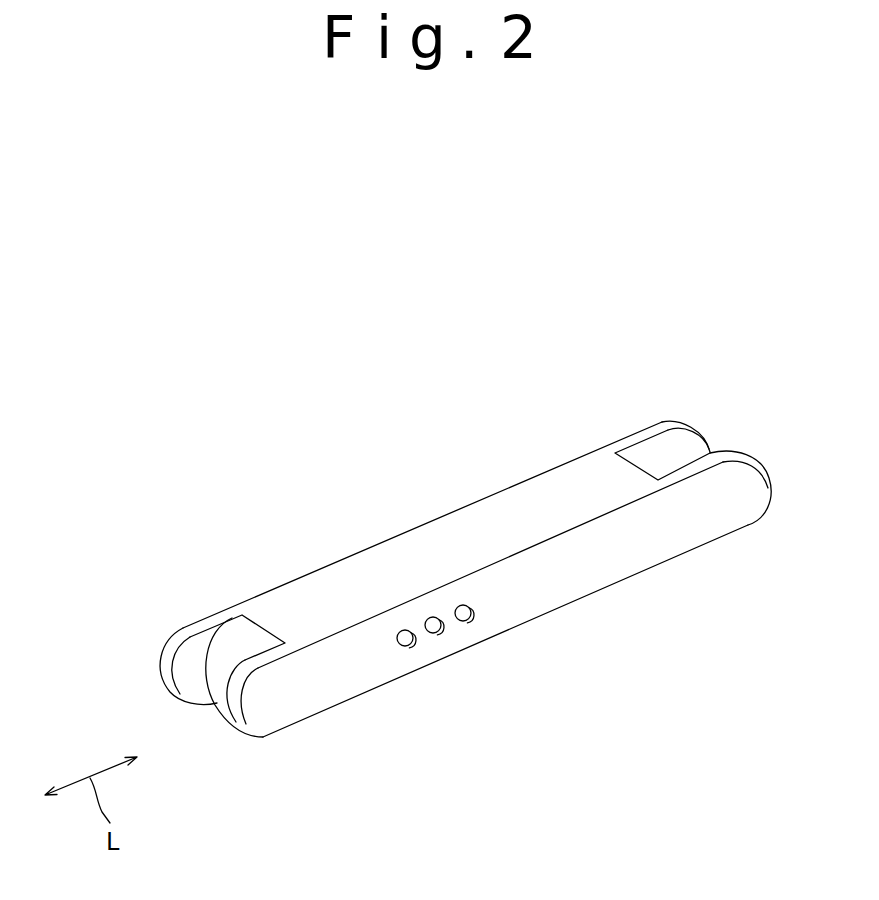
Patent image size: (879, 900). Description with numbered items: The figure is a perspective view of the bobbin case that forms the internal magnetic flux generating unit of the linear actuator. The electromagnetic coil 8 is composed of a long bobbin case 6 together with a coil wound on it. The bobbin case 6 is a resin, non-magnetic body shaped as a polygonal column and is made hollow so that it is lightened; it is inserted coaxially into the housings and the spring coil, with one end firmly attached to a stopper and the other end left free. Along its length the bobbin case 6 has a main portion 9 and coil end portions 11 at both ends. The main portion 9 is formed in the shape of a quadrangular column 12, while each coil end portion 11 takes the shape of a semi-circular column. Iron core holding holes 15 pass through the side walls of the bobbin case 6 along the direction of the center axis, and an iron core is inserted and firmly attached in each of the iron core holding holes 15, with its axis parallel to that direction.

The bobbin case 6 is at (560, 464).
The electromagnetic coil 8 is at (392, 453).
The main portion 9 is at (570, 503).
The coil end portion 11 is at (683, 457).
The quadrangular column 12 is at (544, 588).
The iron core holding hole 15 is at (403, 646).